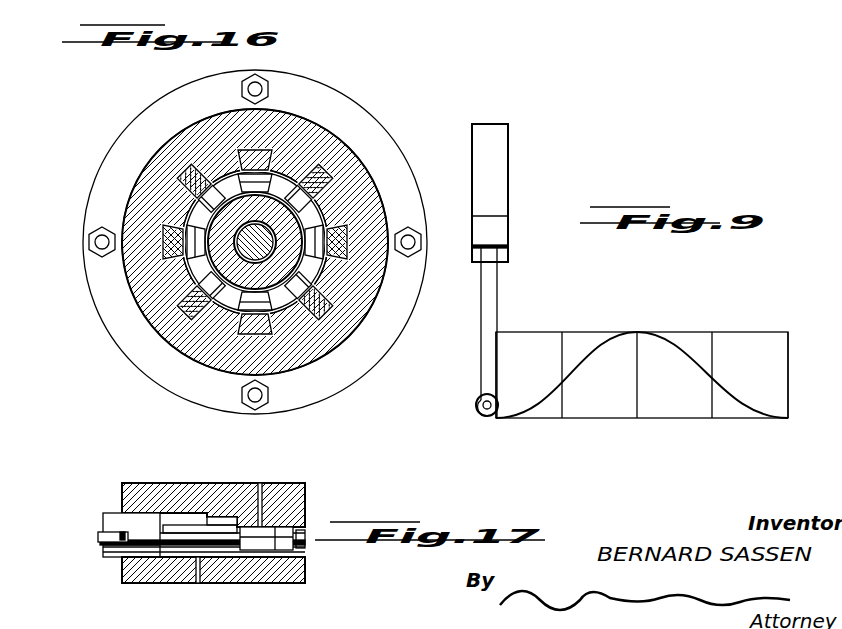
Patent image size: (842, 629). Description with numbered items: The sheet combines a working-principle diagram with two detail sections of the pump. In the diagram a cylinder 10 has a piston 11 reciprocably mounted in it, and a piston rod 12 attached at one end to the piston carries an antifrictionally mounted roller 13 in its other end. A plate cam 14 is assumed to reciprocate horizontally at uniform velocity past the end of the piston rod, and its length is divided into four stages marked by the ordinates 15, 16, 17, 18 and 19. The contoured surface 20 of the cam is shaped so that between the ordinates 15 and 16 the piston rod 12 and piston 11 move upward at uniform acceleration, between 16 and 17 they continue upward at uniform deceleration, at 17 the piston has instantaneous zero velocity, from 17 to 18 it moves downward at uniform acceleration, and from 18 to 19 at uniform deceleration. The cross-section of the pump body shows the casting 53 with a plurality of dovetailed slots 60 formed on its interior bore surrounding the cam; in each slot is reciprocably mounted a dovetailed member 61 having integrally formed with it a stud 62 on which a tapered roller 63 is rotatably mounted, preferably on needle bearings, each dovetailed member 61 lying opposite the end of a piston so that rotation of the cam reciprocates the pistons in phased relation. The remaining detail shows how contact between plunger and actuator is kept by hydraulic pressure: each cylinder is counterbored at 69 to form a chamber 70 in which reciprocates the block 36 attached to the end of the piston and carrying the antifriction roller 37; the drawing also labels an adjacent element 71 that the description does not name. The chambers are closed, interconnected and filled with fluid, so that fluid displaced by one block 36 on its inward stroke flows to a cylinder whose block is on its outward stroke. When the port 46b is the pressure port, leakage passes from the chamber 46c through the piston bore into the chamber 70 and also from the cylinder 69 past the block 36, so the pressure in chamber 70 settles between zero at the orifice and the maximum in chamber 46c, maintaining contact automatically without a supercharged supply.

In FIG. 9, the cylinder 10 is at (508, 175).
In FIG. 9, the piston 11 is at (492, 234).
In FIG. 9, the piston rod 12 is at (500, 312).
In FIG. 9, the roller 13 is at (476, 406).
In FIG. 9, the plate cam 14 is at (672, 352).
In FIG. 9, the ordinate 15 is at (492, 420).
In FIG. 9, the ordinate 16 is at (562, 420).
In FIG. 9, the ordinate 17 is at (637, 420).
In FIG. 9, the ordinate 18 is at (712, 420).
In FIG. 9, the ordinate 19 is at (788, 420).
In FIG. 9, the contoured surface 20 is at (608, 336).
In FIG. 16, the pump body 53 is at (175, 148).
In FIG. 16, the dovetailed slot 60 is at (193, 180).
In FIG. 16, the dovetailed member 61 is at (203, 187).
In FIG. 16, the stud 62 is at (192, 198).
In FIG. 16, the tapered roller 63 is at (177, 207).
In FIG. 17, the block 36 is at (125, 513).
In FIG. 17, the antifriction roller 37 is at (98, 537).
In FIG. 17, the annular groove 46b is at (318, 490).
In FIG. 17, the chamber 46c is at (250, 583).
In FIG. 17, the counterbore 69 is at (150, 583).
In FIG. 17, the chamber 70 is at (212, 517).
In FIG. 17, the upper slot 71 is at (259, 500).